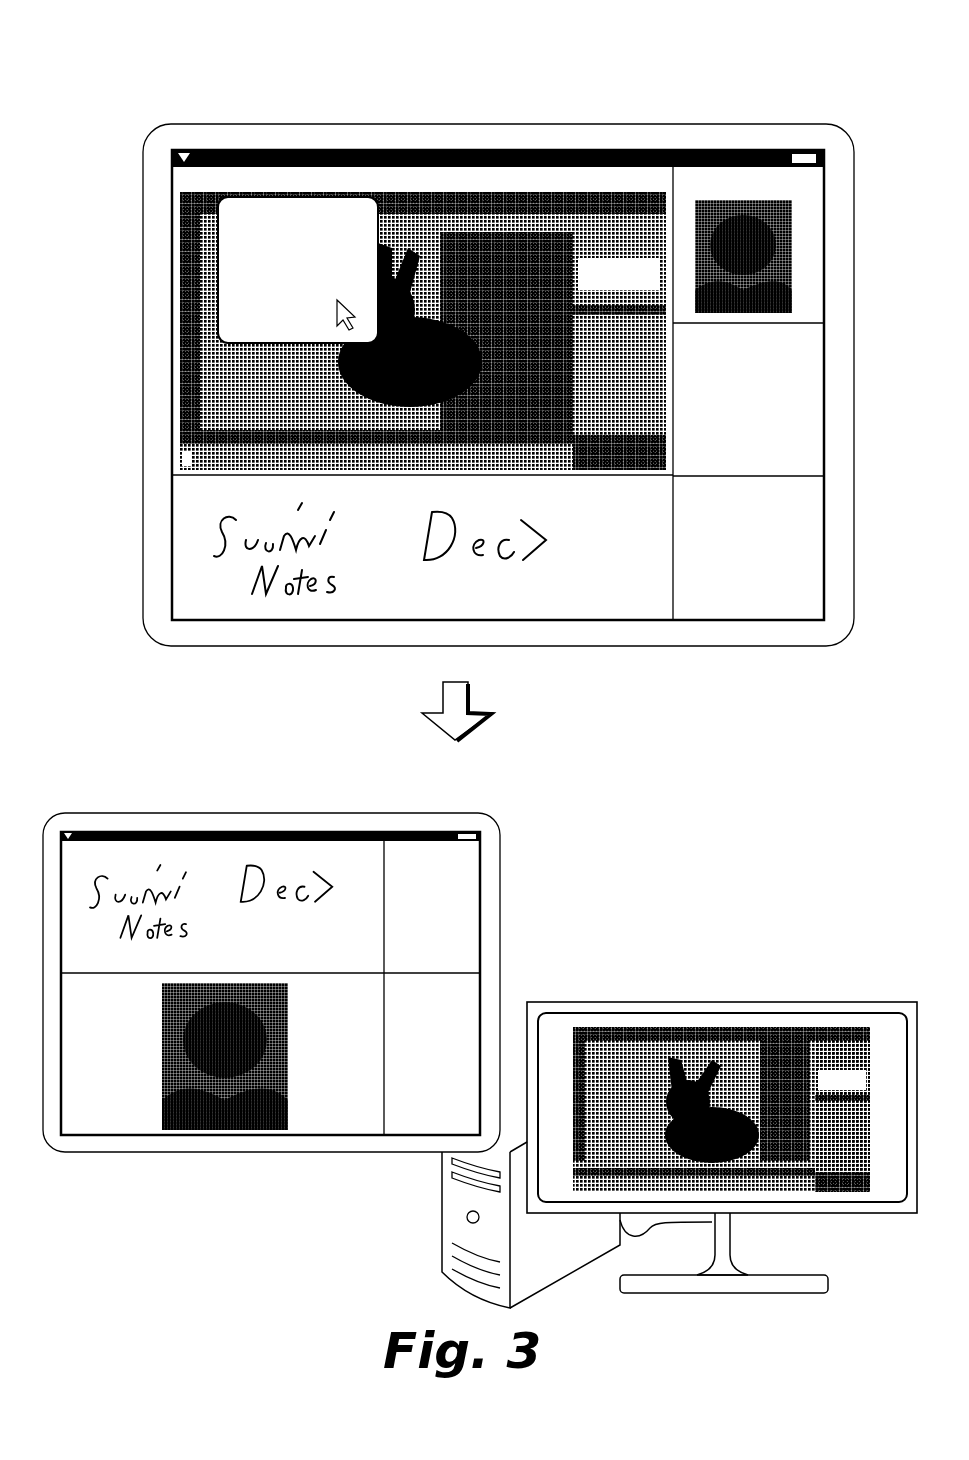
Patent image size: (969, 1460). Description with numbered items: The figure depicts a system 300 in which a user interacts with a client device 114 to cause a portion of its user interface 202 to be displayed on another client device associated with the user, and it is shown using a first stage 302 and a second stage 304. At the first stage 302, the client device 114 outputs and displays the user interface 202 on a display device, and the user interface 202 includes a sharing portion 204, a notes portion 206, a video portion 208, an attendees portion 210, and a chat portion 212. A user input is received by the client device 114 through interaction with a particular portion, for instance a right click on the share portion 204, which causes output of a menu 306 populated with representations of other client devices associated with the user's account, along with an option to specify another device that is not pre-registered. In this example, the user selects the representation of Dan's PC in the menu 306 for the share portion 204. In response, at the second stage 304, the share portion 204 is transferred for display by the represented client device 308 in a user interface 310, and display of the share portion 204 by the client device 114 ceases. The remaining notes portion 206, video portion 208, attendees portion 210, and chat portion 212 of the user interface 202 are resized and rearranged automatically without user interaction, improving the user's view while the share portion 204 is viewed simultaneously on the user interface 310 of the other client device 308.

The system 300 is at (152, 72).
The first stage 302 is at (119, 112).
The second stage 304 is at (119, 787).
The client device 114 is at (143, 365).
The user interface 202 is at (470, 128).
The sharing portion 204 is at (730, 1026).
The notes portion 206 is at (307, 726).
The video portion 208 is at (428, 651).
The attendees portion 210 is at (603, 648).
The chat portion 212 is at (592, 807).
The menu 306 is at (303, 195).
The client device 308 is at (440, 1212).
The user interface 310 is at (580, 1012).